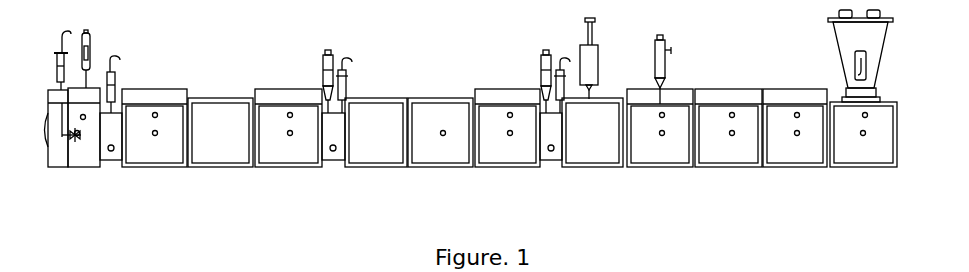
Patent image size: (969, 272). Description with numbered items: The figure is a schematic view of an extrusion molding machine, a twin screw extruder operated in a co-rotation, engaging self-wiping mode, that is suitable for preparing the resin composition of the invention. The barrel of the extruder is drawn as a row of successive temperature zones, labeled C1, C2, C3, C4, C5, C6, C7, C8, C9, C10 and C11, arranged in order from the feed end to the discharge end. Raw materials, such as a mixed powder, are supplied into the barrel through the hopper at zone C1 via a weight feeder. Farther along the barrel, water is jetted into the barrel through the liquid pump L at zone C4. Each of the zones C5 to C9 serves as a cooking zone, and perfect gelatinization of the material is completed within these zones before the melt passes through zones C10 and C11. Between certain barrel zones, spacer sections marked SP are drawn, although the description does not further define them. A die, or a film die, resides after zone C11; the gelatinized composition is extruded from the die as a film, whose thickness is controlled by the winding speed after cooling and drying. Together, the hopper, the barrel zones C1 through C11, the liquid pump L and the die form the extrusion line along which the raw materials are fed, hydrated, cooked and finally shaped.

The barrel zone C1 is at (863, 134).
The barrel zone C2 is at (795, 128).
The barrel zone C3 is at (728, 128).
The barrel zone C4 is at (660, 128).
The barrel zone C5 is at (592, 132).
The barrel zone C6 is at (507, 128).
The barrel zone C7 is at (440, 132).
The barrel zone C8 is at (376, 132).
The barrel zone C9 is at (288, 128).
The barrel zone C10 is at (220, 132).
The barrel zone C11 is at (154, 128).
The spacer / side port SP is at (335, 105).
The liquid pump L is at (625, 61).
The element die is at (83, 98).
The element hopper is at (860, 56).